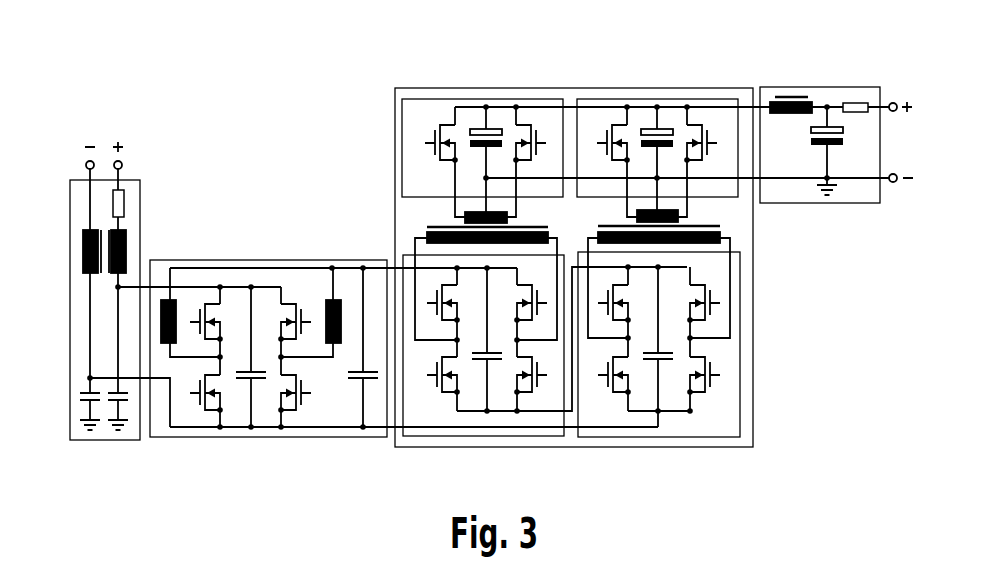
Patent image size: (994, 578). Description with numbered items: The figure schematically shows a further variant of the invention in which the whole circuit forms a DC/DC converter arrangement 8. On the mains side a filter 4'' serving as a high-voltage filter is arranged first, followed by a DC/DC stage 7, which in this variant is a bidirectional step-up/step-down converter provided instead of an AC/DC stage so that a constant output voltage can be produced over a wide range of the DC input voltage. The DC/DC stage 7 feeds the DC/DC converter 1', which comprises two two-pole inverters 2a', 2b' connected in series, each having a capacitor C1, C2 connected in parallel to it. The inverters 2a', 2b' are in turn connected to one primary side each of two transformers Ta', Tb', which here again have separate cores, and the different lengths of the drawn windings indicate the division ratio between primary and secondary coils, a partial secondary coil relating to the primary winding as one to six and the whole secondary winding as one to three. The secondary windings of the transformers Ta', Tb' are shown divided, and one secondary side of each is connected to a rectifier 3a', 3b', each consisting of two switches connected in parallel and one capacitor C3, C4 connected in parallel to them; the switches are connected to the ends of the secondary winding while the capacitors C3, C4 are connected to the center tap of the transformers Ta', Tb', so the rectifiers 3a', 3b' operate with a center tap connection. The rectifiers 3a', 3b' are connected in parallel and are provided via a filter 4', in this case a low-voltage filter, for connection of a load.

The DC/DC converter arrangement 8 is at (230, 78).
The DC/DC converter 1' is at (603, 277).
The two-pole inverter 2a' is at (458, 376).
The two-pole inverter 2b' is at (690, 371).
The rectifier 3a' is at (435, 130).
The rectifier 3b' is at (622, 128).
The filter 4' is at (836, 119).
The filter 4'' is at (145, 291).
The DC/DC stage 7 is at (268, 374).
The transformer Ta' is at (445, 273).
The transformer Tb' is at (699, 274).
The capacitor C1 is at (517, 382).
The capacitor C2 is at (672, 357).
The capacitor C3 is at (453, 128).
The capacitor C4 is at (674, 127).